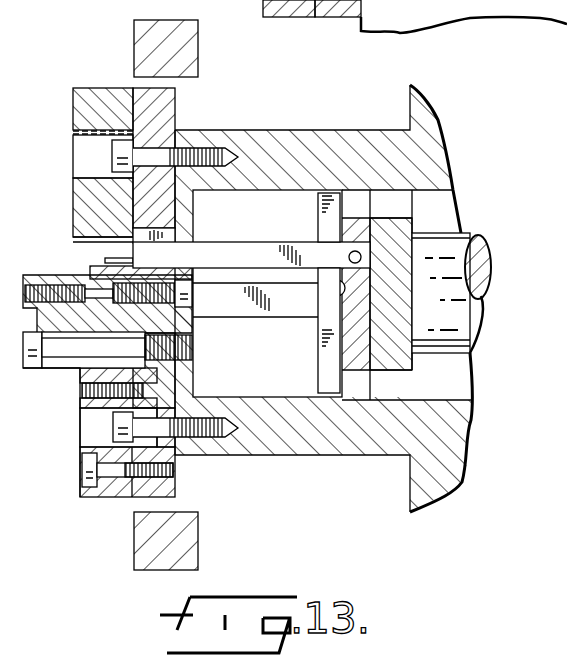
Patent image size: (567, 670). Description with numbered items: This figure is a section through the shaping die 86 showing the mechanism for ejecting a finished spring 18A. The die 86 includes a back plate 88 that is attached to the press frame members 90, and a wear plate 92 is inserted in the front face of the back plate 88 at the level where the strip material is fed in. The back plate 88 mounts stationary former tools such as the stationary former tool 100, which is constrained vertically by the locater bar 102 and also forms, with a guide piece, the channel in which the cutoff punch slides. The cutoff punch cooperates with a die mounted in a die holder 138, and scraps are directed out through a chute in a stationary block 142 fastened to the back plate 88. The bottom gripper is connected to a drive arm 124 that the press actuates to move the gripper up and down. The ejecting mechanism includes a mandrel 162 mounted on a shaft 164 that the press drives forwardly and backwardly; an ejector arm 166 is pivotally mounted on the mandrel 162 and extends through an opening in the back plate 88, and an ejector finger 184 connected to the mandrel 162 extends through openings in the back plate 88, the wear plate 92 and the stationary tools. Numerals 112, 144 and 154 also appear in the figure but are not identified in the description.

The die 86 is at (66, 160).
The back plate 88 is at (172, 102).
The press frame members 90 is at (303, 133).
The wear plate 92 is at (150, 226).
The stationary former tool 100 is at (88, 198).
The locater bar 102 is at (93, 87).
The mounting block 112 is at (157, 22).
The drive arm 124 is at (134, 560).
The die holder 138 is at (67, 370).
The stationary block 142 is at (82, 455).
The member 144 is at (550, 640).
The member 154 is at (550, 590).
The mandrel 162 is at (403, 230).
The shaft 164 is at (490, 258).
The ejector arm 166 is at (242, 315).
The ejector finger 184 is at (252, 248).
The finished spring 18A is at (113, 257).